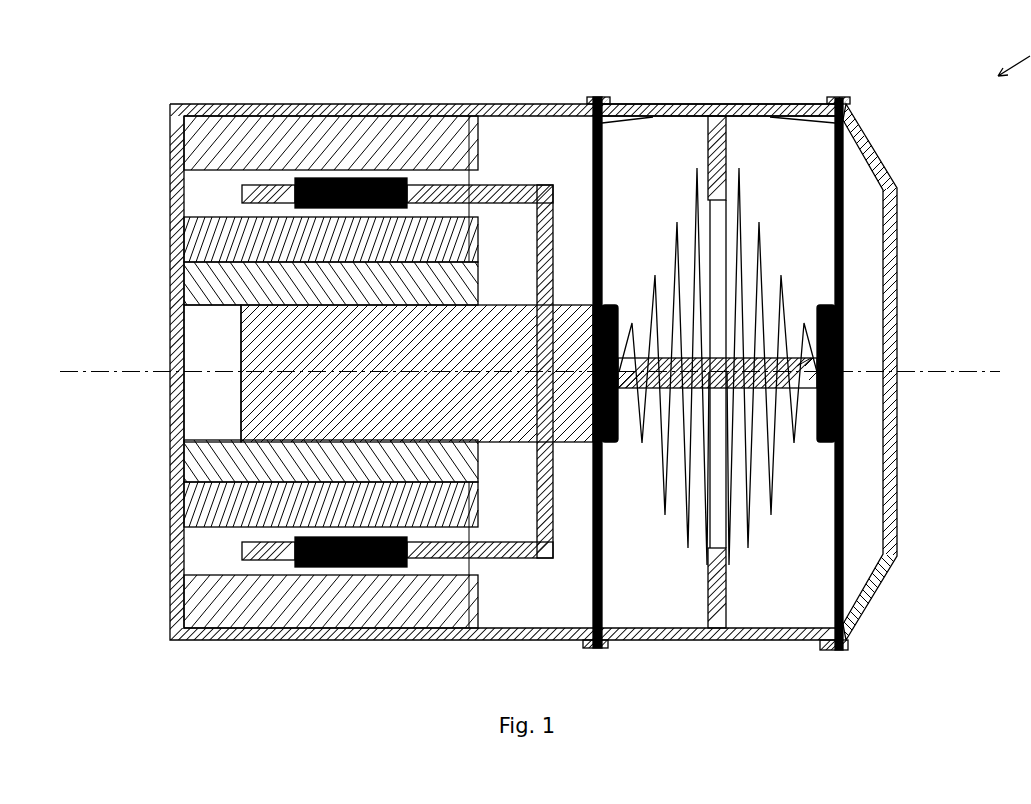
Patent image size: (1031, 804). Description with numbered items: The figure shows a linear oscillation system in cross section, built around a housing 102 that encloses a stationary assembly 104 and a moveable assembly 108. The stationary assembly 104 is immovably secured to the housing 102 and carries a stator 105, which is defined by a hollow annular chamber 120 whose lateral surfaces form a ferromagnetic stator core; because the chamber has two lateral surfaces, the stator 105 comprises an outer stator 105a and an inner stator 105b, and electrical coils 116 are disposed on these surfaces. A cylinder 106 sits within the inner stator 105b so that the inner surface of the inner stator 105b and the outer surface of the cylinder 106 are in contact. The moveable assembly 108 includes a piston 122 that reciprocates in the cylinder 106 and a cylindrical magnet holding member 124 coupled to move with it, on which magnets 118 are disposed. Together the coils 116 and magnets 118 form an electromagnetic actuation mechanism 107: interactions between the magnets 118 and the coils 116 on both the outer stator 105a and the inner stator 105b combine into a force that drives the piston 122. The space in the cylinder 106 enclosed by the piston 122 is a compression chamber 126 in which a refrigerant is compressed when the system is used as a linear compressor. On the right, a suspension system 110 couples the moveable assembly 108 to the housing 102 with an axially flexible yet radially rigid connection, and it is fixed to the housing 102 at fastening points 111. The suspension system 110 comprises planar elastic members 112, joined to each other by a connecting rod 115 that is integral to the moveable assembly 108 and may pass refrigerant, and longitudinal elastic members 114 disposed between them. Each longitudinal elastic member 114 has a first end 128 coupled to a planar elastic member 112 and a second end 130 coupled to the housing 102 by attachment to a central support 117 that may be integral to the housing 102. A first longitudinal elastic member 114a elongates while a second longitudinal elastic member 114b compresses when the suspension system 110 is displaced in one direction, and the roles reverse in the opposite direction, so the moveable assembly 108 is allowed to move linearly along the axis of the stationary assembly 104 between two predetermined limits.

The housing 102 is at (878, 152).
The stationary assembly 104 is at (178, 285).
The stator 105 is at (307, 297).
The outer stator 105a is at (409, 120).
The inner stator 105b is at (478, 250).
The cylinder 106 is at (182, 468).
The actuation mechanism 107 is at (470, 175).
The moveable assembly 108 is at (553, 253).
The suspension system 110 is at (843, 275).
The fastening points 111 is at (600, 97).
The planar elastic members 112 is at (770, 108).
The longitudinal elastic members 114 is at (718, 424).
The first longitudinal elastic member 114a is at (685, 505).
The second longitudinal elastic member 114b is at (750, 505).
The connecting rod 115 is at (815, 390).
The electrical coil 116 is at (255, 118).
The central support 117 is at (728, 125).
The magnet 118 is at (352, 185).
The hollow annular chamber 120 is at (182, 553).
The piston 122 is at (241, 337).
The cylindrical magnet holding member 124 is at (530, 558).
The compression chamber 126 is at (230, 411).
The first end 128 is at (612, 302).
The second end 130 is at (697, 178).